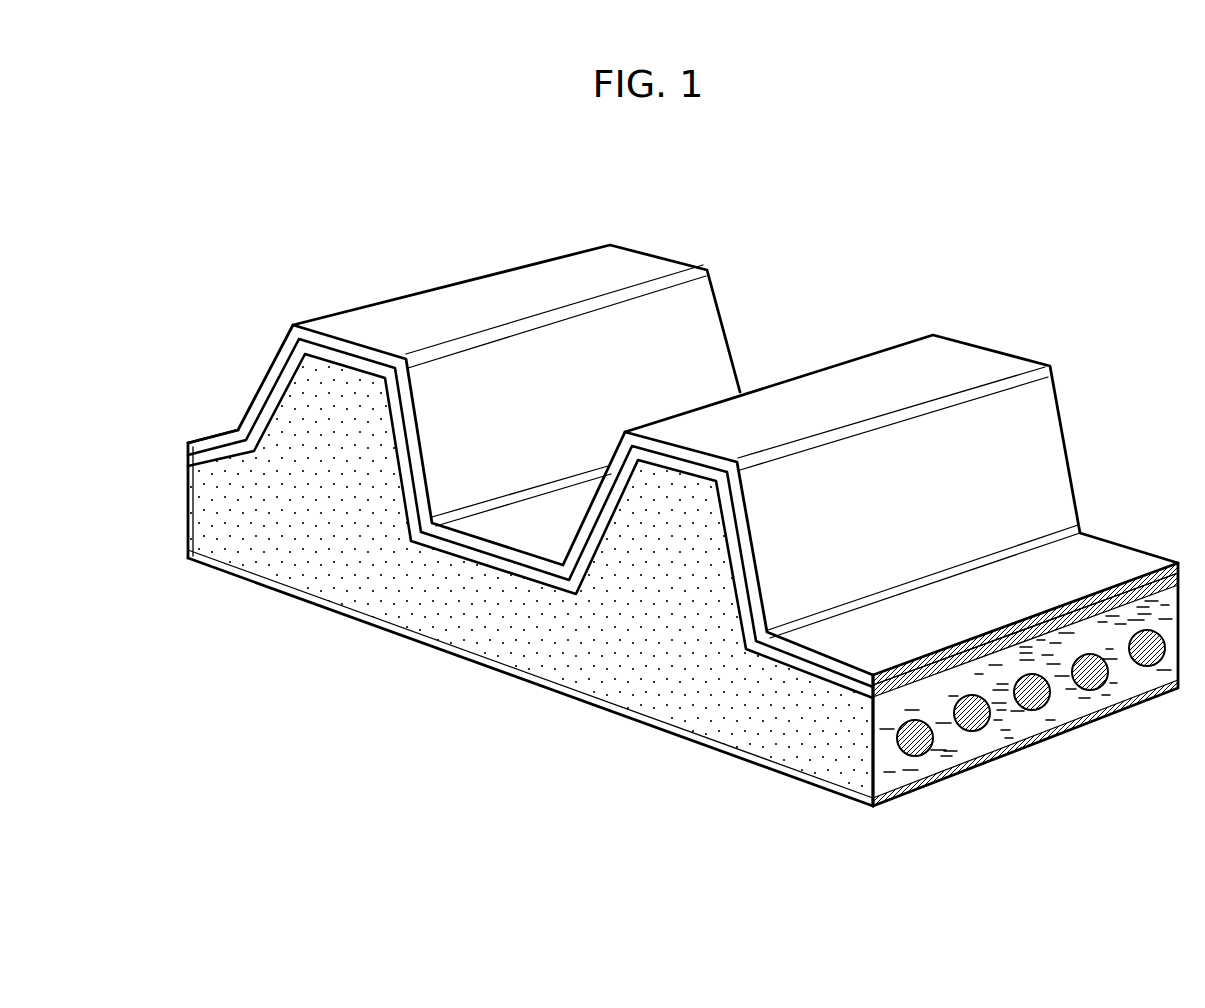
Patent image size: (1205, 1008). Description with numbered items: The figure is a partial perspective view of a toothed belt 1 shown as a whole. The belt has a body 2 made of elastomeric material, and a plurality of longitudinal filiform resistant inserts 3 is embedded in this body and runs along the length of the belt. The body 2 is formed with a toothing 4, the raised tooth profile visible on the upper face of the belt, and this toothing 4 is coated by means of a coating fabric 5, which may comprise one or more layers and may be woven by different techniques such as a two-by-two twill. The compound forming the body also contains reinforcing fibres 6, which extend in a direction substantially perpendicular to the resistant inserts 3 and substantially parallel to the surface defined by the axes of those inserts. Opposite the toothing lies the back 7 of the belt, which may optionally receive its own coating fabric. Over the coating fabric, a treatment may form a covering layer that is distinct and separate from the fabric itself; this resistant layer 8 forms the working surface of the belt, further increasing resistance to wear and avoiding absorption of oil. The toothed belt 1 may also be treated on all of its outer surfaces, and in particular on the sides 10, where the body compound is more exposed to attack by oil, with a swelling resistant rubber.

The toothed belt 1 is at (398, 692).
The body 2 is at (577, 657).
The longitudinal filiform resistant inserts 3 is at (975, 713).
The toothing 4 is at (847, 386).
The coating fabric 5 is at (200, 462).
The reinforcing fibres 6 is at (906, 765).
The back 7 is at (678, 737).
The resistant layer 8 is at (330, 340).
The sides 10 is at (302, 524).